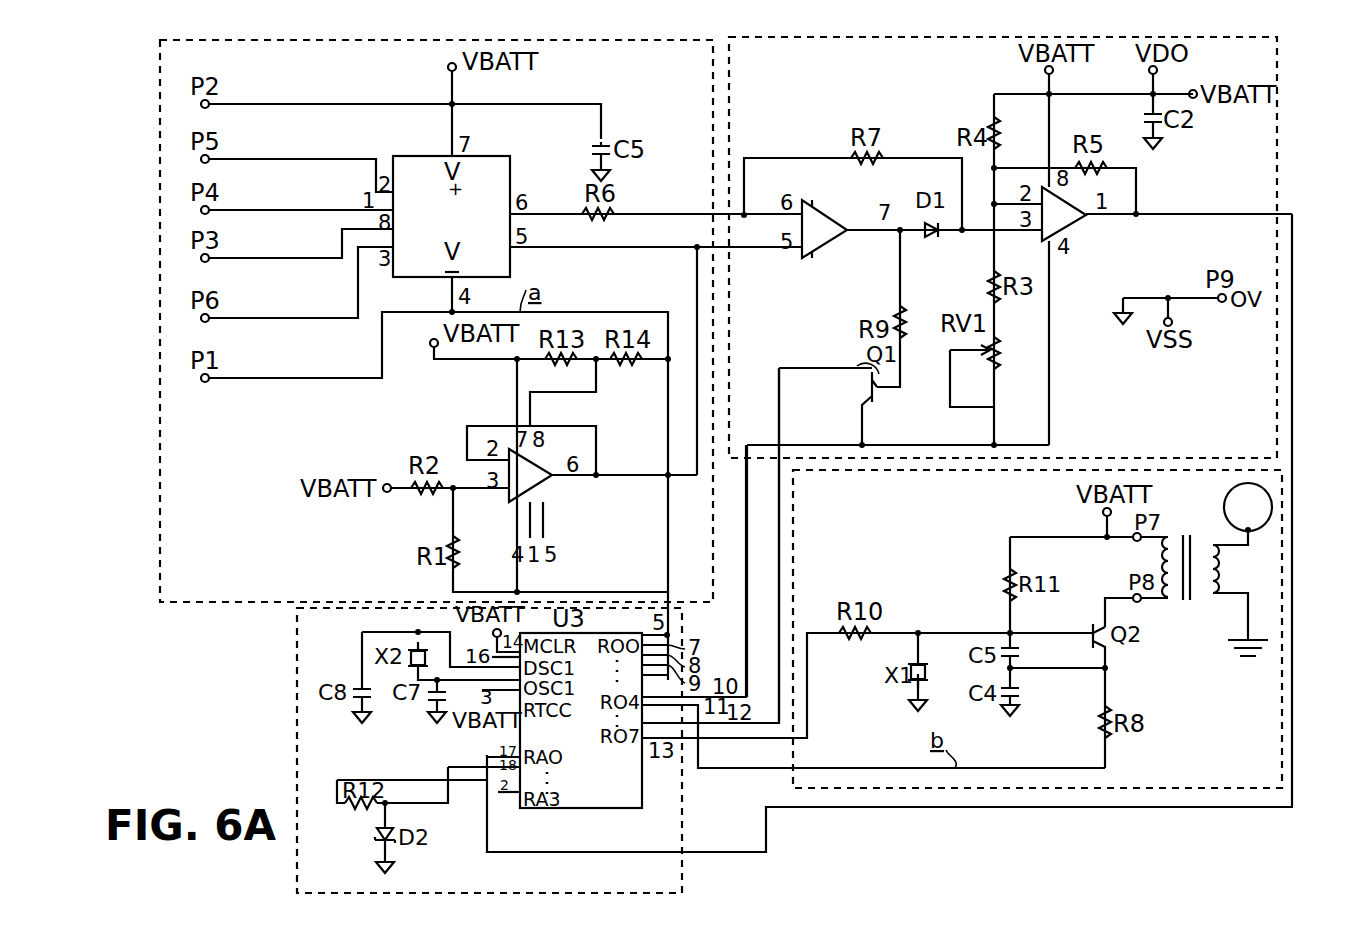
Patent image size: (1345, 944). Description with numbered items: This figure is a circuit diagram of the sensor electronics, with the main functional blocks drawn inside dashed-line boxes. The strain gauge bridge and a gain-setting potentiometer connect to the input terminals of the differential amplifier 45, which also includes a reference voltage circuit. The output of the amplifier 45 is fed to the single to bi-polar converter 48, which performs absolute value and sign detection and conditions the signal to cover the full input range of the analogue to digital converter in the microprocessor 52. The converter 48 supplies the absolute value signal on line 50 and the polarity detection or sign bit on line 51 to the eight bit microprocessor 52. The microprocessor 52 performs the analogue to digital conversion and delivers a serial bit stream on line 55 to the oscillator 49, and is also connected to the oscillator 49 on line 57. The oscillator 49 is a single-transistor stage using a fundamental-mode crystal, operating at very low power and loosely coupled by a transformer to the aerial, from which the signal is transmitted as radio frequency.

The amplifier 45 is at (150, 148).
The single to bi-polar converter 48 is at (1285, 152).
The oscillator 49 is at (1158, 790).
The line 50 is at (1010, 808).
The line 51 is at (779, 503).
The microprocessor 52 is at (683, 866).
The line 55 is at (952, 632).
The line 57 is at (850, 768).